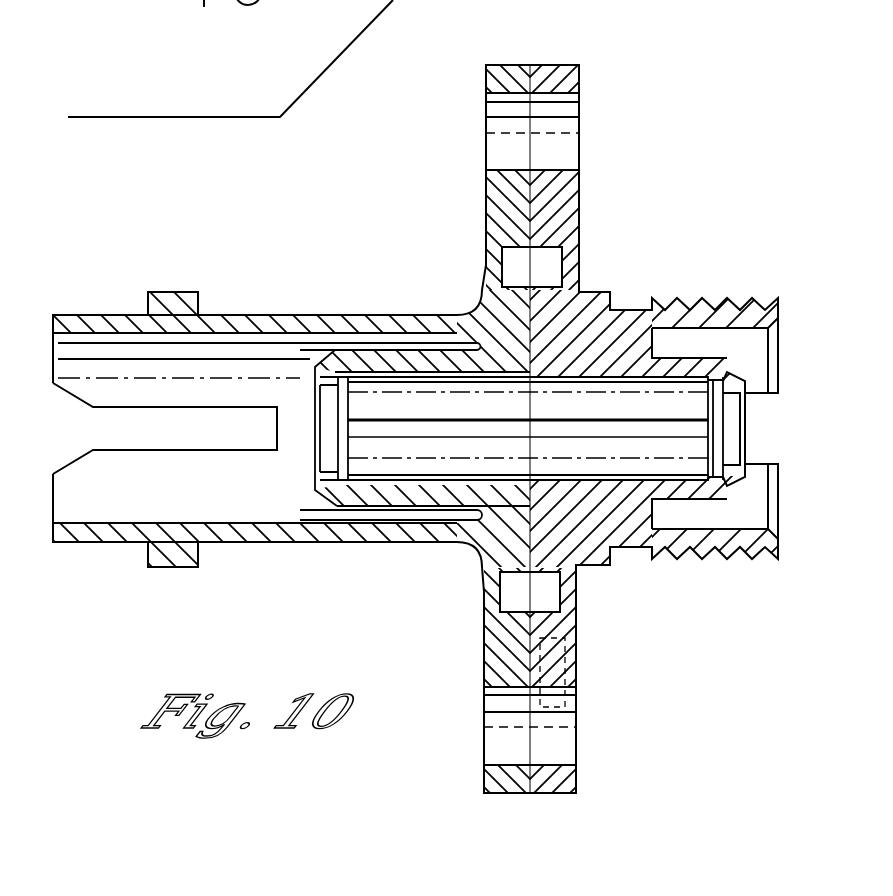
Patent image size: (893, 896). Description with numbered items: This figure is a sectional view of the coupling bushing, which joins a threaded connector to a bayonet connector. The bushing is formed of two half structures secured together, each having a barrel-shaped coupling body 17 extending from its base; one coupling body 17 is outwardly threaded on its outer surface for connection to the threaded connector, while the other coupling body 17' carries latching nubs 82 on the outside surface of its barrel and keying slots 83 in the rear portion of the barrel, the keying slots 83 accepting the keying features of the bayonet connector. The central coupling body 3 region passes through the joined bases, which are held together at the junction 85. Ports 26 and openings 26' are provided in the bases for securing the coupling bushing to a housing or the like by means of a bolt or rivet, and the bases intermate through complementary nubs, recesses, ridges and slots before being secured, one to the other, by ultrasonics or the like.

The tube 3 is at (623, 385).
The coupling body 17 is at (402, 429).
The union nut 17' is at (744, 381).
The ports 26 is at (384, 389).
The sealing ring 26' is at (574, 440).
The latching nubs 82 is at (174, 292).
The keying slots 83 is at (128, 427).
The branch connection 85 is at (534, 60).